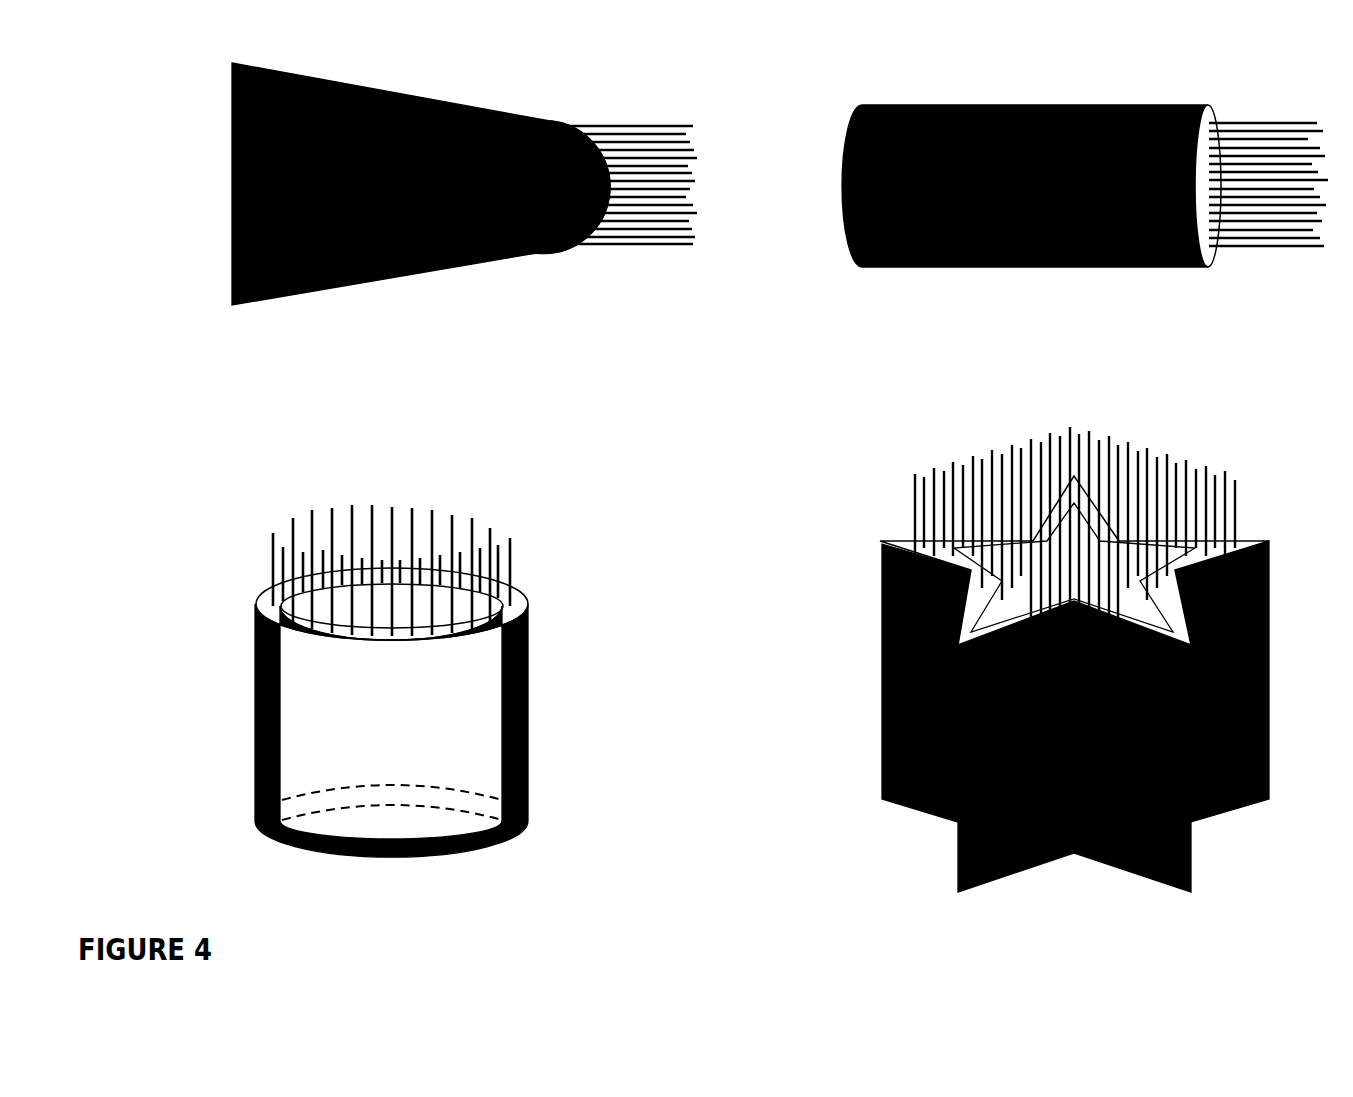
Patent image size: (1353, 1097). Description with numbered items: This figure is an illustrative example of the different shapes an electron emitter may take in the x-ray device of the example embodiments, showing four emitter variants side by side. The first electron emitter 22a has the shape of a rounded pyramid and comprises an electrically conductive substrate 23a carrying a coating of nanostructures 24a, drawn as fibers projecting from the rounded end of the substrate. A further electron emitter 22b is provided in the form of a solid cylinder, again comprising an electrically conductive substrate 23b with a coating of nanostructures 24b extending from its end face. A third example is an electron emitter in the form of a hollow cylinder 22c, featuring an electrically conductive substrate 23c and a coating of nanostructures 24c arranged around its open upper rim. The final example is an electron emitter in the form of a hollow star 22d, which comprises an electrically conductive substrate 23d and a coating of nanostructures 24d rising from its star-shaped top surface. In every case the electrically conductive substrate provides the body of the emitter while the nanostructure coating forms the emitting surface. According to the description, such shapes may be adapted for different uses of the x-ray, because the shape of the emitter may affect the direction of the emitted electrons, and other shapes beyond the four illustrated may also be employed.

The electron emitter 22a is at (232, 164).
The electrically conductive substrate 23a is at (578, 243).
The coating of nanostructures 24a is at (640, 124).
The electron emitter 22b is at (888, 103).
The electrically conductive substrate 23b is at (1220, 258).
The coating of nanostructures 24b is at (1257, 122).
The hollow cylinder 22c is at (530, 750).
The electrically conductive substrate 23c is at (523, 603).
The coating of nanostructures 24c is at (270, 562).
The hollow star 22d is at (1268, 642).
The electrically conductive substrate 23d is at (1250, 540).
The coating of nanostructures 24d is at (915, 492).